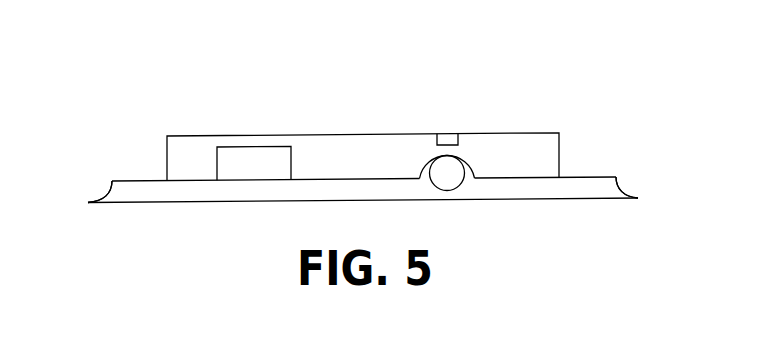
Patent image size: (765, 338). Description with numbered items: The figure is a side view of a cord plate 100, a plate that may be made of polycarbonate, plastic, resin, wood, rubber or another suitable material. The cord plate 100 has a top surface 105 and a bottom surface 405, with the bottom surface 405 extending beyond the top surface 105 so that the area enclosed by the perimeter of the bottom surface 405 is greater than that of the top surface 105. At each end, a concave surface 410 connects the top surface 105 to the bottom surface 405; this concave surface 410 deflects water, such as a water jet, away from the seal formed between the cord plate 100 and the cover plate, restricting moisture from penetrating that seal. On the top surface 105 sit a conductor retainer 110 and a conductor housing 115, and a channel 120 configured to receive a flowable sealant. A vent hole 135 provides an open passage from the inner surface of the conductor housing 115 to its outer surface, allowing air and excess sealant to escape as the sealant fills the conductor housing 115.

The cord plate 100 is at (195, 57).
The top surface 105 is at (139, 180).
The conductor retainer 110 is at (247, 147).
The conductor housing 115 is at (472, 158).
The channel 120 is at (367, 132).
The vent hole 135 is at (448, 133).
The bottom surface 405 is at (262, 205).
The concave surface 410 is at (100, 203).